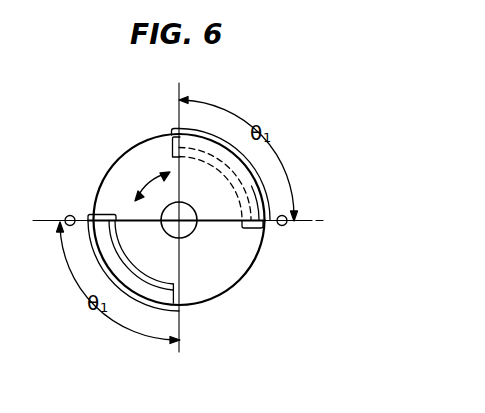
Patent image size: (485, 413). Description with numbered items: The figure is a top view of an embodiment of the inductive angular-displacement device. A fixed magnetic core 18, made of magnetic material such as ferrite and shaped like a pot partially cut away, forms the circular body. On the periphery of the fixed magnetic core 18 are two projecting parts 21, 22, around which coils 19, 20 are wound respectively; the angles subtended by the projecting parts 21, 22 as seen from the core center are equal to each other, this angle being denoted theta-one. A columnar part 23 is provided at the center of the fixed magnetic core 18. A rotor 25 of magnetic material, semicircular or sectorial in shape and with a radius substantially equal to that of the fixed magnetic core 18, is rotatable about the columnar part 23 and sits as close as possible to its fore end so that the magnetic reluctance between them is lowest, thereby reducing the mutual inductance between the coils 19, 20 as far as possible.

The fixed magnetic core 18 is at (231, 274).
The coil 19 is at (102, 272).
The coil 20 is at (222, 136).
The projecting part 21 is at (108, 249).
The projecting part 22 is at (244, 183).
The columnar part 23 is at (195, 226).
The rotor 25 is at (134, 149).